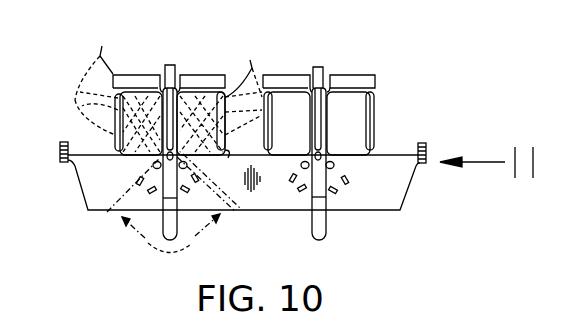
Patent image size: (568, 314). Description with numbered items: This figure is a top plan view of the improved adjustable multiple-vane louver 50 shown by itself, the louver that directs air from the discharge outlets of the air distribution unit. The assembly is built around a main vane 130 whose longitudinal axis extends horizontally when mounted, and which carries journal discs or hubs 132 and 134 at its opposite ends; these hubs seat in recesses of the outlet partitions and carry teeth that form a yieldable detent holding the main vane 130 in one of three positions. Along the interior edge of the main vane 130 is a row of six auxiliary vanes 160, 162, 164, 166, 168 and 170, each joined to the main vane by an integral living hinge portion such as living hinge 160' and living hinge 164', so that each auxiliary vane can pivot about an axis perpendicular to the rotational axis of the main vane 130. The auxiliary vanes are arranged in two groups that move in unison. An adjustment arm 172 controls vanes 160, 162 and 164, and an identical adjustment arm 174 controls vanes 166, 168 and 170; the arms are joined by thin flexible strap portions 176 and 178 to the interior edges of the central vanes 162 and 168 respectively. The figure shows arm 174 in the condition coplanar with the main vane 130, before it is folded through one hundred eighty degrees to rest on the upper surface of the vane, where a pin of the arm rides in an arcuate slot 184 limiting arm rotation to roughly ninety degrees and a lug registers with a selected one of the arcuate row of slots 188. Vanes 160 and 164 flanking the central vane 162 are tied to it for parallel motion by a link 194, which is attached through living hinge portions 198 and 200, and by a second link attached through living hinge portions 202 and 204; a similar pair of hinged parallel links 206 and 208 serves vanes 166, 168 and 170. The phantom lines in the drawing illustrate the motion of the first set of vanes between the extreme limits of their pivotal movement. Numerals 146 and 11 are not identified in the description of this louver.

The multiple-vane louver 50 is at (76, 62).
The link 194 is at (94, 63).
The living hinge portion 198 is at (158, 82).
The living hinge portion 200 is at (163, 74).
The flexible strap portion 176 is at (168, 64).
The auxiliary vane 162 is at (176, 66).
The living hinge portion 202 is at (186, 76).
The living hinge portion 204 is at (192, 84).
The auxiliary vane 164 is at (246, 91).
The hinged parallel link 206 is at (271, 75).
The flexible strap portion 178 is at (318, 64).
The hinged parallel link 208 is at (351, 76).
The auxiliary vane 170 is at (372, 118).
The auxiliary vane 166 is at (273, 124).
The auxiliary vane 168 is at (325, 123).
The auxiliary vane 160 is at (75, 113).
The living hinge portion 160' is at (123, 134).
The journal disc 132 is at (60, 156).
The journal disc 134 is at (426, 150).
The main vane 130 is at (403, 197).
The arcuate slot 184 is at (335, 165).
The slots 188 is at (348, 185).
The living hinge portion 164' is at (206, 139).
The adjustment arm 172 is at (170, 236).
The adjustment arm 174 is at (326, 237).
The base 146 is at (370, 313).
The section line 11 is at (506, 162).